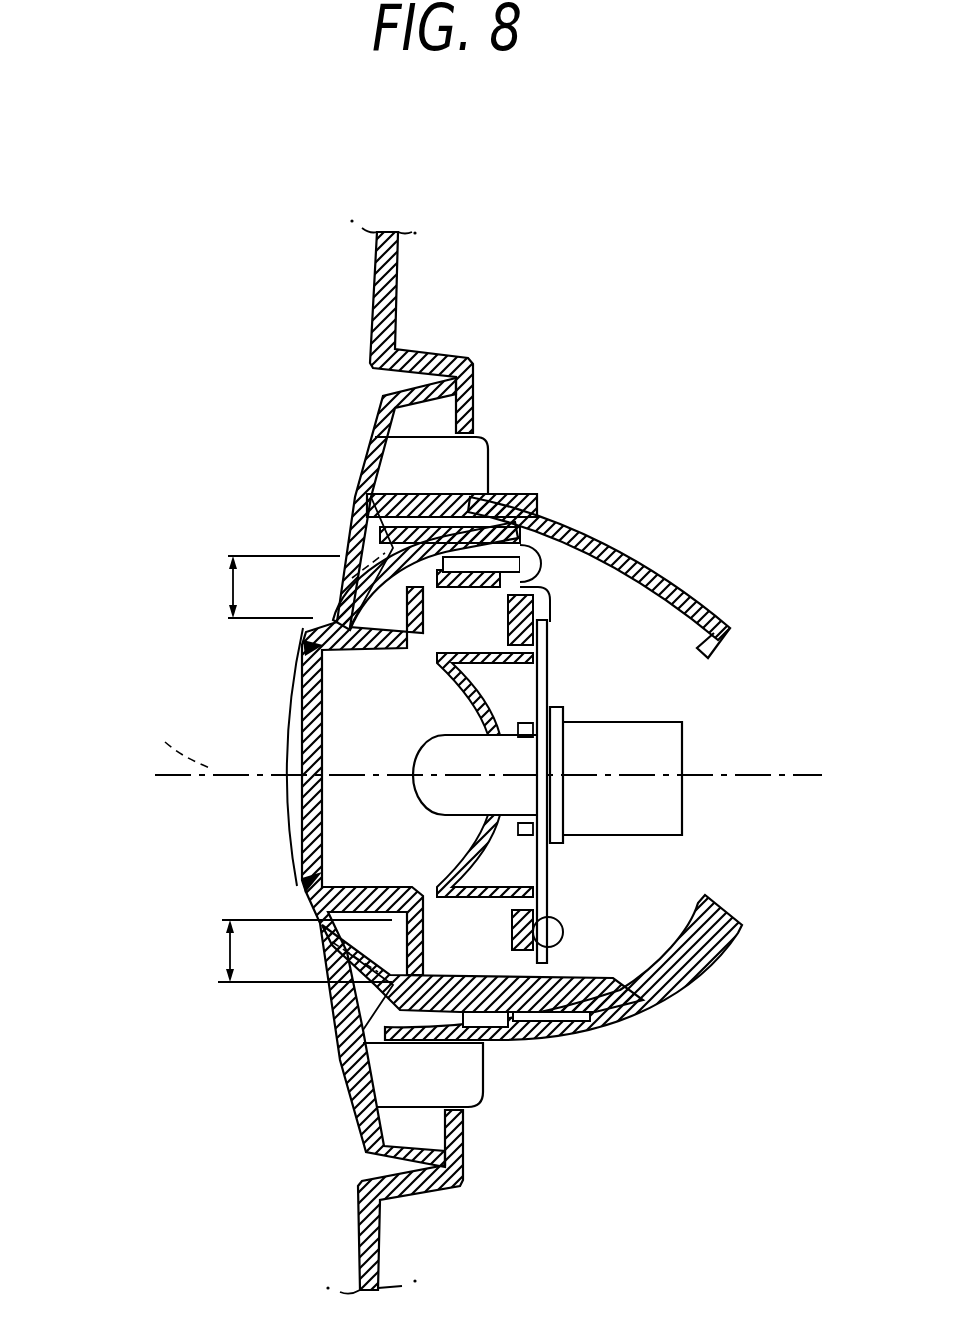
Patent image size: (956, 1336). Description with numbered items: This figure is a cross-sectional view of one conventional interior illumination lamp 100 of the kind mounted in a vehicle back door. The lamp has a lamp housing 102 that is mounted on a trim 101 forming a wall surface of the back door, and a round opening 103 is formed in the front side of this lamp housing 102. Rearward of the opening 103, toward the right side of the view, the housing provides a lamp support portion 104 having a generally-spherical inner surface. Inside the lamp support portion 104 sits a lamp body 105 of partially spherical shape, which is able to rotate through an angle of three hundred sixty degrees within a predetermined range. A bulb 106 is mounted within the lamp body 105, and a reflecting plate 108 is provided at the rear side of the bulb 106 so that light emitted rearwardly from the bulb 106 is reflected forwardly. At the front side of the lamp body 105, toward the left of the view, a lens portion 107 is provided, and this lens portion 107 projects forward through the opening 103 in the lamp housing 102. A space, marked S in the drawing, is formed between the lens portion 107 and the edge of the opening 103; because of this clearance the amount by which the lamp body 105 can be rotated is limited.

The interior illumination lamp 100 is at (160, 354).
The trim 101 is at (375, 297).
The lamp housing 102 is at (363, 1137).
The opening 103 is at (342, 557).
The lamp support portion 104 is at (663, 562).
The lamp body 105 is at (688, 682).
The bulb 106 is at (433, 757).
The lens portion 107 is at (287, 822).
The reflecting plate 108 is at (467, 847).